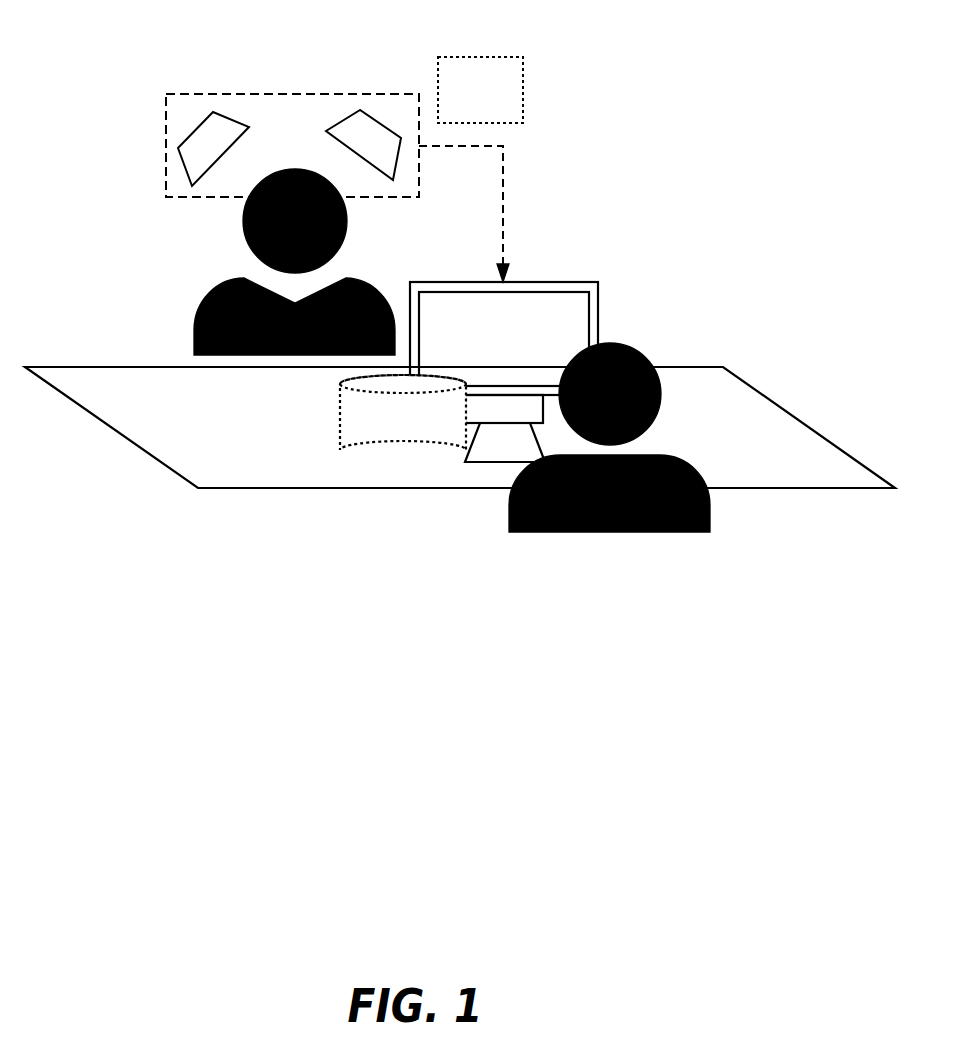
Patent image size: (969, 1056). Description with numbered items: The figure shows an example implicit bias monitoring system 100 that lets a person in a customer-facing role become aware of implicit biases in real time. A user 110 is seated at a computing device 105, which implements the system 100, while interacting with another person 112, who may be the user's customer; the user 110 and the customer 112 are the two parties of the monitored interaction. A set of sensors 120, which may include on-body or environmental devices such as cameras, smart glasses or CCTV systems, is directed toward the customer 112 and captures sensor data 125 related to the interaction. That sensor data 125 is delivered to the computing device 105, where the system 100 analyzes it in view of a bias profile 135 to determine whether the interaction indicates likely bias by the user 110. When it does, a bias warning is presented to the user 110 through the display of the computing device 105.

The implicit bias monitoring system 100 is at (262, 555).
The computing device 105 is at (457, 280).
The user 110 is at (508, 522).
The other person 112 is at (345, 277).
The sensors 120 is at (229, 94).
The sensor data 125 is at (500, 59).
The bias profile 135 is at (342, 420).